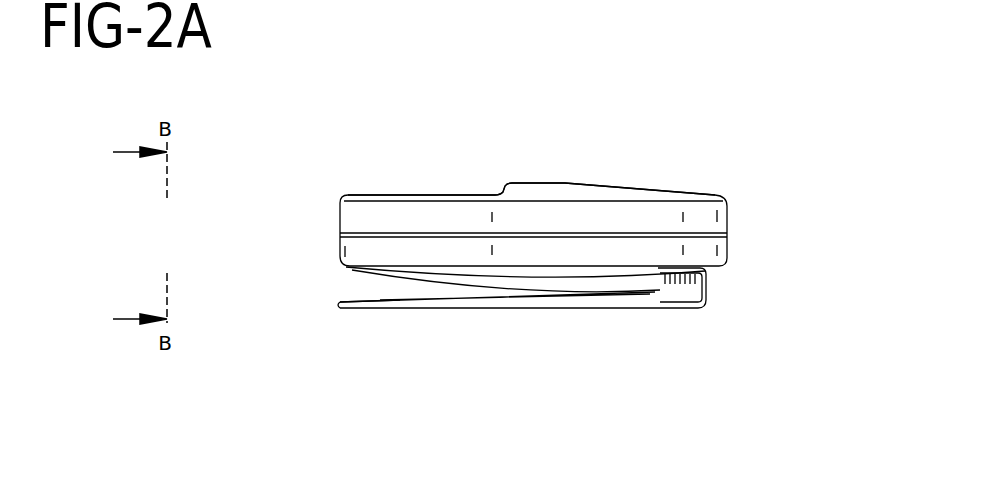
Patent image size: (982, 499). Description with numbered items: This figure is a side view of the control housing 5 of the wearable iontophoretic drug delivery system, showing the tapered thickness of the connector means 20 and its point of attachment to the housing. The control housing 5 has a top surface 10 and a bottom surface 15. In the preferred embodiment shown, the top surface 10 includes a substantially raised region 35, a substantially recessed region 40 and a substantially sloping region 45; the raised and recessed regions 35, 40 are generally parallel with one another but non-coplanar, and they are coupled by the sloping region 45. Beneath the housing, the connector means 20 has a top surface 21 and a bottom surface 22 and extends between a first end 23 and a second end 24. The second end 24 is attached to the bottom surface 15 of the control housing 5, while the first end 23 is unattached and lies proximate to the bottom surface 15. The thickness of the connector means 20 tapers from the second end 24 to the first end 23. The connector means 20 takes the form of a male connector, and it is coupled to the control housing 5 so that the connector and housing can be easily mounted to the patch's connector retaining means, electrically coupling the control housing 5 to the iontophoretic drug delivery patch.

The control housing 5 is at (727, 246).
The top surface 10 is at (655, 190).
The bottom surface 15 is at (345, 270).
The connector means 20 is at (604, 320).
The top surface of connector means 21 is at (352, 300).
The bottom surface of connector means 22 is at (478, 309).
The first end 23 is at (336, 308).
The second end 24 is at (705, 290).
The raised region 35 is at (567, 183).
The recessed region 40 is at (408, 193).
The sloping region 45 is at (497, 189).